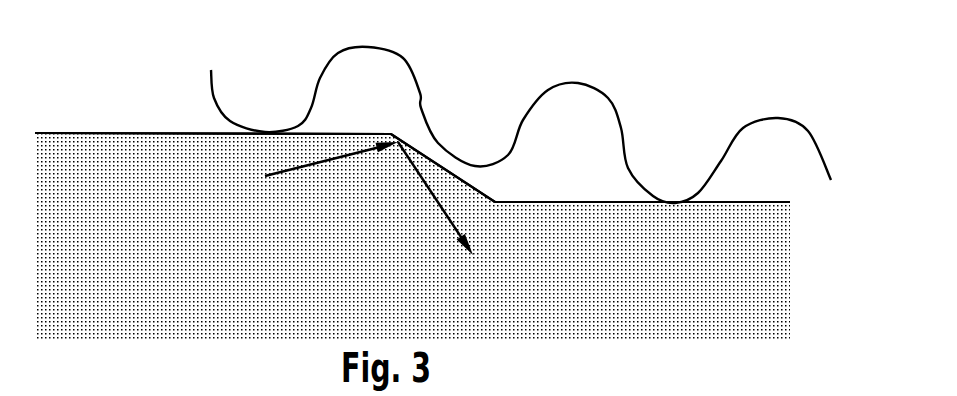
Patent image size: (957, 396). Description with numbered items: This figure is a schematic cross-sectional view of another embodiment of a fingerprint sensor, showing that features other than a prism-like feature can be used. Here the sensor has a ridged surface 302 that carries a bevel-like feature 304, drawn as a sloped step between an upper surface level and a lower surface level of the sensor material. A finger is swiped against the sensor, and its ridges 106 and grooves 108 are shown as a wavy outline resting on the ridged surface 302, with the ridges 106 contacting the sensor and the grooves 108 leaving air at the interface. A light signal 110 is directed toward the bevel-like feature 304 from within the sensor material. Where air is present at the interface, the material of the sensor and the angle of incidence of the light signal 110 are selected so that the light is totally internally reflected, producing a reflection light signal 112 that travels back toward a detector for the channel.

The ridges 106 is at (695, 194).
The grooves 108 is at (597, 83).
The light signal 110 is at (277, 167).
The reflection light signal 112 is at (447, 207).
The ridged surface 302 is at (590, 195).
The bevel-like feature 304 is at (463, 187).